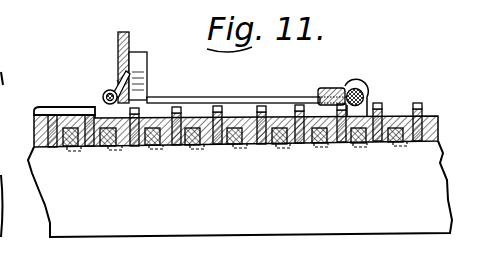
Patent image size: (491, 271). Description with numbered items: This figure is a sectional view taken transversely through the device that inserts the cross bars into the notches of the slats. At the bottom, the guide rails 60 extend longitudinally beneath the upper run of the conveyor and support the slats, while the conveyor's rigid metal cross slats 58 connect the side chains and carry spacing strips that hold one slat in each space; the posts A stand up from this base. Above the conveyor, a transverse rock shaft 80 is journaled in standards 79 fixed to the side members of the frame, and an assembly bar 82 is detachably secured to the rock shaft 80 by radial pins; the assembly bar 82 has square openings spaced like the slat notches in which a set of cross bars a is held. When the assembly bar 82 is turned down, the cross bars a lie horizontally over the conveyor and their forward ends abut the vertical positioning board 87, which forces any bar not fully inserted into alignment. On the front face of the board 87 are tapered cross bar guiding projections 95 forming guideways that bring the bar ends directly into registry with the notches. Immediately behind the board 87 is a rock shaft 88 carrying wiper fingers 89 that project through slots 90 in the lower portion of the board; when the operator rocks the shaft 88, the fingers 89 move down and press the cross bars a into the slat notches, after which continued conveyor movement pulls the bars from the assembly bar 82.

The guide rails 60 is at (240, 189).
The cross slats 58 is at (238, 120).
The pin A is at (177, 114).
The cross bars a is at (246, 84).
The positioning board 87 is at (129, 42).
The rock shaft 88 is at (105, 91).
The wiper fingers 89 is at (117, 82).
The slots 90 is at (123, 92).
The cross bar guiding projections 95 is at (143, 56).
The assembly bar 82 is at (327, 87).
The rock shaft 80 is at (357, 88).
The standards 79 is at (368, 91).